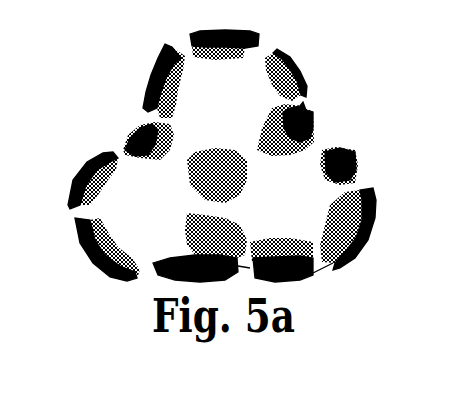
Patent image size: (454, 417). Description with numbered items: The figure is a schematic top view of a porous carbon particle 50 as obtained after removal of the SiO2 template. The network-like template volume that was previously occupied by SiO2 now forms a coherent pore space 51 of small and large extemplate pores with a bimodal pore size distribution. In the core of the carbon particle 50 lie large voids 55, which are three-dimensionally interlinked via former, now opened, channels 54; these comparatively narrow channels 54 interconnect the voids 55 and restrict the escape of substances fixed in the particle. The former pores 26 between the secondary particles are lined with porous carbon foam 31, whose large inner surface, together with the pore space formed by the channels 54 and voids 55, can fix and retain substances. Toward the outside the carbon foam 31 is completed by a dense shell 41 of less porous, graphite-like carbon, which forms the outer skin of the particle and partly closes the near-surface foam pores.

The porous carbon particle 50 is at (261, 167).
The coherent pore space 51 is at (258, 56).
The pores 26 is at (304, 118).
The carbon foam 31 is at (345, 268).
The shell 41 is at (345, 156).
The channels 54 is at (213, 208).
The voids 55 is at (229, 112).